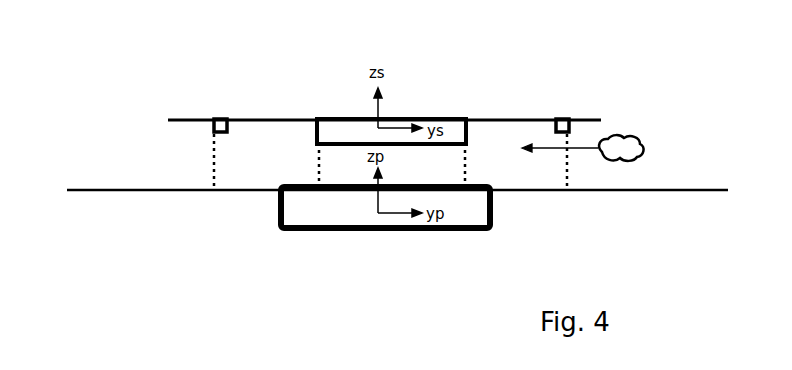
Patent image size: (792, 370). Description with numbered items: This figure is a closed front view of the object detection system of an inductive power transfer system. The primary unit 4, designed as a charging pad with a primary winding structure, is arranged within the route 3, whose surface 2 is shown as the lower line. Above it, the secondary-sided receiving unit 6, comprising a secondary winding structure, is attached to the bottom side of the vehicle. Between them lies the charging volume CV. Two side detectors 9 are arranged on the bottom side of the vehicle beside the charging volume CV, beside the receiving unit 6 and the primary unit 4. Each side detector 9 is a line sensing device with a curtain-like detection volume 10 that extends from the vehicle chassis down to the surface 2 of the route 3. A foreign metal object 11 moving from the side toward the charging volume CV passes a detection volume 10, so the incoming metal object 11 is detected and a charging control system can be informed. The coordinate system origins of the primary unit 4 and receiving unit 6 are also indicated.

The surface 2 is at (133, 190).
The route 3 is at (63, 305).
The primary unit 4 is at (326, 210).
The secondary-sided receiving unit 6 is at (359, 118).
The side detectors 9 is at (213, 118).
The detection volume 10 is at (213, 166).
The foreign metal object 11 is at (636, 136).
The charging volume CV is at (327, 173).